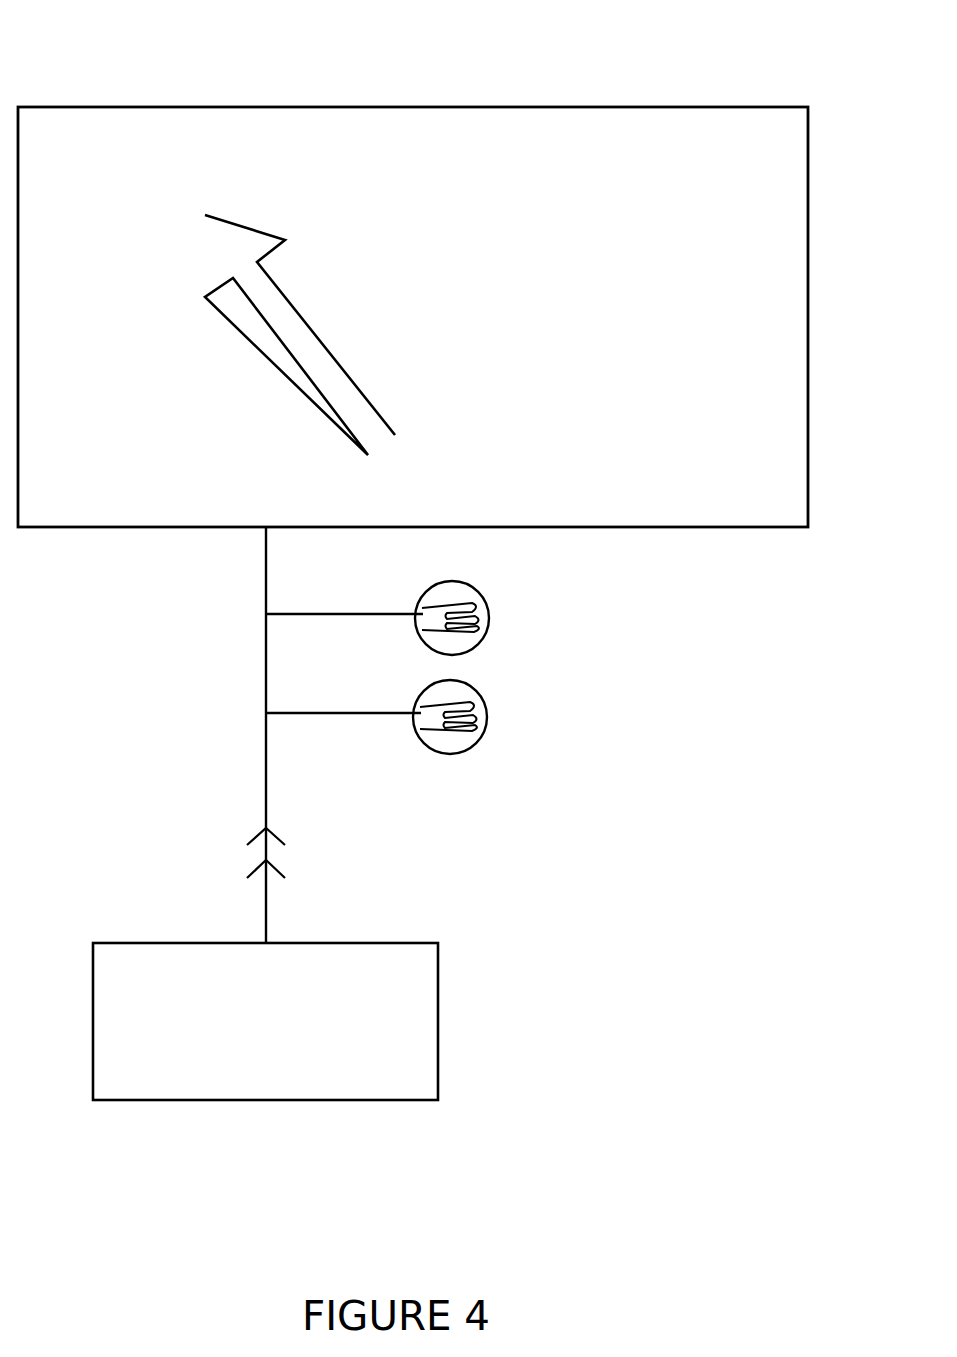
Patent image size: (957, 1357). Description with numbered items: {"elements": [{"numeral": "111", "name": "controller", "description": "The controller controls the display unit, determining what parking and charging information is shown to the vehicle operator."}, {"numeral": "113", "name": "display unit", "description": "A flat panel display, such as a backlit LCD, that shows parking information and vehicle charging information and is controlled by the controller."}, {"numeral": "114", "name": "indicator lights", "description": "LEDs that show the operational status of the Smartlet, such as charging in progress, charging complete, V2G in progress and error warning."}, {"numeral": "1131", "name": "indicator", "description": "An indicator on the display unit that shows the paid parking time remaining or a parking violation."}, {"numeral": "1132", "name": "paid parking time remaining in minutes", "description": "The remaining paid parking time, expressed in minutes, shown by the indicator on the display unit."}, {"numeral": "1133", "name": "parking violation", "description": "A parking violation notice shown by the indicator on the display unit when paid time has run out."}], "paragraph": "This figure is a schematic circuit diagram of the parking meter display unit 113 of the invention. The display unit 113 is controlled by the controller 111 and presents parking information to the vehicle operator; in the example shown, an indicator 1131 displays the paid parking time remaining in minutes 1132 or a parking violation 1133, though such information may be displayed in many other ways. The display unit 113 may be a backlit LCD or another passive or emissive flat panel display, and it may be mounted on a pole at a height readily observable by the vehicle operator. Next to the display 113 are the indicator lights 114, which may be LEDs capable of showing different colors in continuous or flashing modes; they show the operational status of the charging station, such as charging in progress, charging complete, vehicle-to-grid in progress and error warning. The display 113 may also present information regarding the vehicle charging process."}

The controller 111 is at (163, 957).
The display panel 113 is at (700, 478).
The lamps 114 is at (480, 727).
The pointer arrow 1131 is at (312, 350).
The scale numbers 1132 is at (558, 147).
The violation indicator text 1133 is at (172, 135).